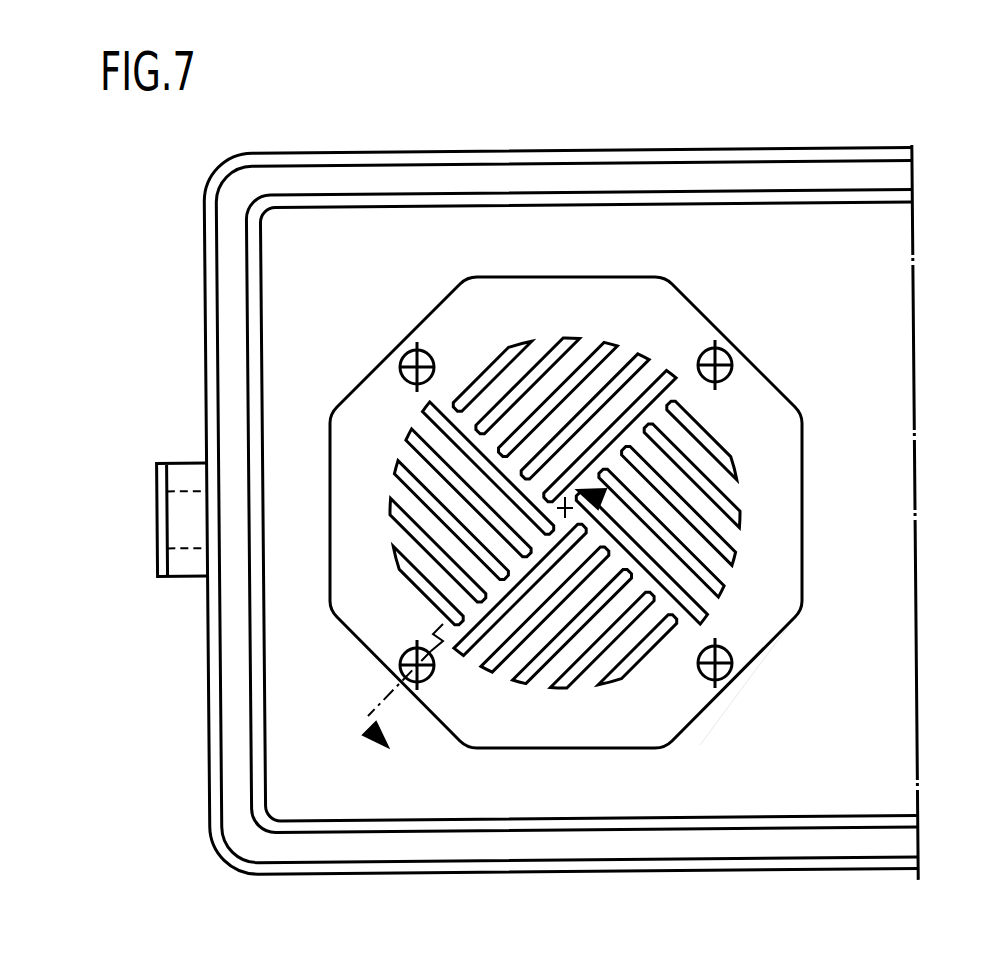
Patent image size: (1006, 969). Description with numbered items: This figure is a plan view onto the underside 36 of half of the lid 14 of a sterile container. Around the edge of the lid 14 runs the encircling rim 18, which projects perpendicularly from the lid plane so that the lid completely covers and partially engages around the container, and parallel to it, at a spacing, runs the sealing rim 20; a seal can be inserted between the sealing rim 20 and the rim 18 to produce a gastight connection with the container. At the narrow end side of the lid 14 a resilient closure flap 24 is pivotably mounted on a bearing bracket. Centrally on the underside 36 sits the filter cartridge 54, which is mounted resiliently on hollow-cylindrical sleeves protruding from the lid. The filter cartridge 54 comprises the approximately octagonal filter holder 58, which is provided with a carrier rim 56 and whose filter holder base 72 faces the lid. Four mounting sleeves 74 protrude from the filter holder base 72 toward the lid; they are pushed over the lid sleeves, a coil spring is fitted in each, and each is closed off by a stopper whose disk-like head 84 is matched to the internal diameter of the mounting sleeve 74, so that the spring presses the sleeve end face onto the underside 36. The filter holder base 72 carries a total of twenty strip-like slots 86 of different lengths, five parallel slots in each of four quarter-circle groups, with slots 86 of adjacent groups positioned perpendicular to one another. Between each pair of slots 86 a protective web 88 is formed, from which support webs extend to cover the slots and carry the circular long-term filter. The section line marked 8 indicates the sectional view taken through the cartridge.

The section line 8- 8 is at (473, 595).
The lid 14 is at (514, 516).
The encircling rim 18 is at (209, 661).
The sealing rim 20 is at (259, 712).
The resilient closure flap 24 is at (174, 471).
The underside of the lid 36 is at (290, 317).
The filter cartridge 54 is at (651, 510).
The carrier rim 56 is at (805, 531).
The filter holder 58 is at (771, 646).
The filter holder base 72 is at (473, 730).
The mounting sleeve 74 is at (417, 683).
The disk-like head 84 is at (728, 360).
The strip-like slot 86 is at (482, 380).
The protective web 88 is at (570, 395).